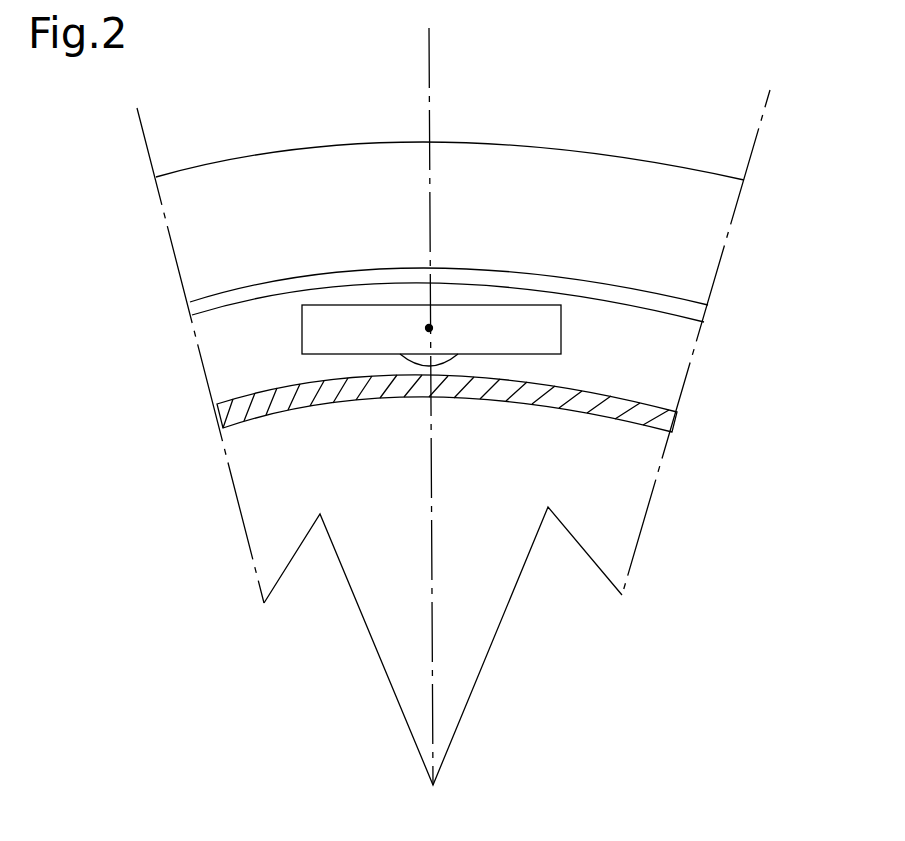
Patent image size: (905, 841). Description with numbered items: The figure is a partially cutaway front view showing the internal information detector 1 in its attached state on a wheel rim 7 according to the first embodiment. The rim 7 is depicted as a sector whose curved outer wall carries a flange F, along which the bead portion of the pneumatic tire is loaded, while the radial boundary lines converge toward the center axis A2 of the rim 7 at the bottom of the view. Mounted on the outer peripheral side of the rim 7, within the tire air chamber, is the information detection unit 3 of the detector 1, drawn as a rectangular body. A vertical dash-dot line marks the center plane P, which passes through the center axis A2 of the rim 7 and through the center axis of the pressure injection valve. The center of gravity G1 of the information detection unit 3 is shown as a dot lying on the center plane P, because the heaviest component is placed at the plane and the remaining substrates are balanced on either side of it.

The internal information detector 1 is at (301, 322).
The information detection unit 3 is at (306, 339).
The rim 7 is at (668, 356).
The center plane P is at (432, 75).
The center of gravity G1 is at (430, 328).
The flange F is at (714, 230).
The center axis A2 is at (433, 786).